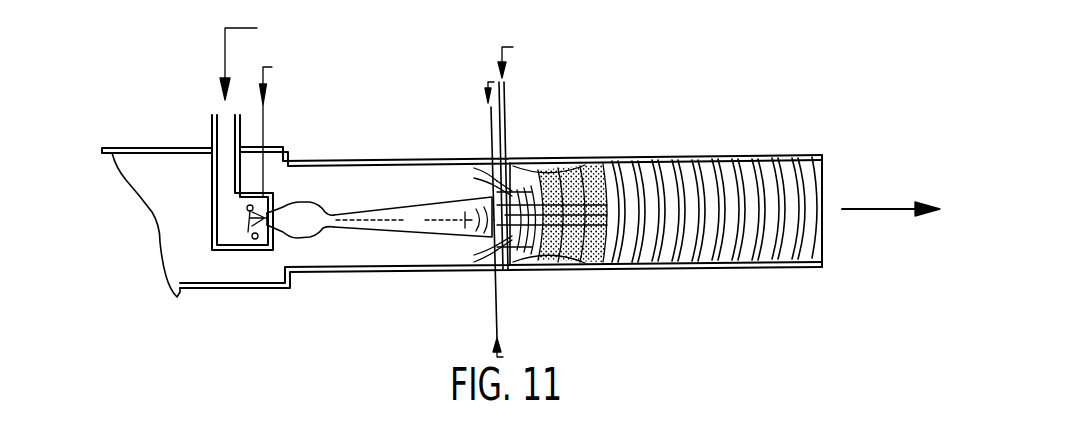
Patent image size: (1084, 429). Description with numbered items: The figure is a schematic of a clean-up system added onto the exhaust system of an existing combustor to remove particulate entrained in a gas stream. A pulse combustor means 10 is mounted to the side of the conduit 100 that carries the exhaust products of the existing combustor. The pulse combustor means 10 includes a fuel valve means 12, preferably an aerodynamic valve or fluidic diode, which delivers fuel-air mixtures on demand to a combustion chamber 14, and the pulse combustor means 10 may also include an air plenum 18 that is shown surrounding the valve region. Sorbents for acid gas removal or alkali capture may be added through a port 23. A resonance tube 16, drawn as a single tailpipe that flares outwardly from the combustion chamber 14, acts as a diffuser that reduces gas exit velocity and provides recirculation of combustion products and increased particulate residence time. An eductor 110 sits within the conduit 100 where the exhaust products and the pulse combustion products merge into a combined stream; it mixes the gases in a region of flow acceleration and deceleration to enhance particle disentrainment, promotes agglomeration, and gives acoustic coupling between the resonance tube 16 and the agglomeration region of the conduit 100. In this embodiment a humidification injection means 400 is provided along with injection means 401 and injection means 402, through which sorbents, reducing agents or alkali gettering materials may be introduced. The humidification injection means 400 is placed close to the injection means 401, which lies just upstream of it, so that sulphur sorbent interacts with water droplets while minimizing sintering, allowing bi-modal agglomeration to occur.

The conduit 100 is at (142, 148).
The air plenum 18 is at (213, 202).
The port 23 is at (264, 128).
The fuel valve means 12 is at (252, 238).
The combustion chamber 14 is at (302, 203).
The resonance tube 16 is at (396, 207).
The pulse combustor means 10 is at (380, 248).
The injection means 401 is at (489, 110).
The injection means 402 is at (494, 311).
The humidification injection means 400 is at (506, 102).
The eductor 110 is at (551, 172).